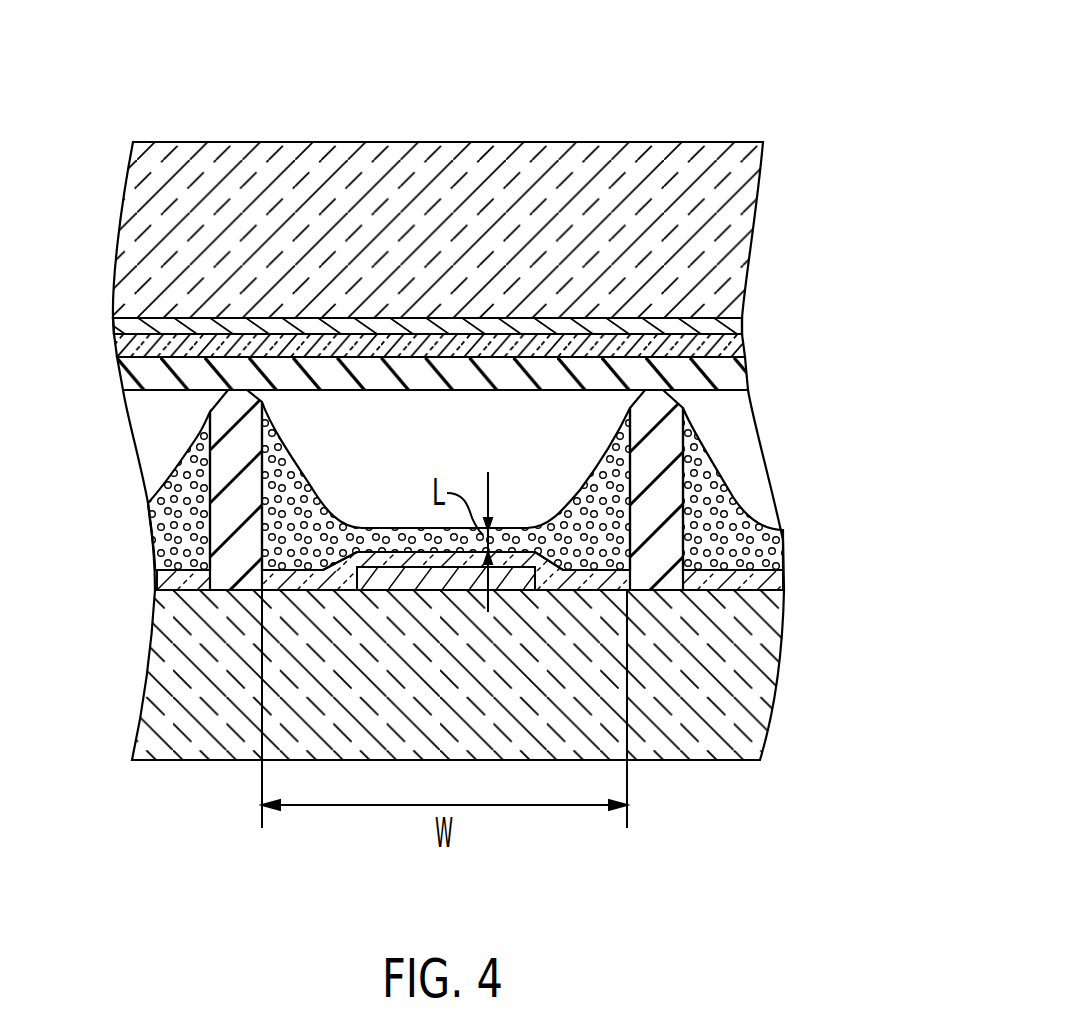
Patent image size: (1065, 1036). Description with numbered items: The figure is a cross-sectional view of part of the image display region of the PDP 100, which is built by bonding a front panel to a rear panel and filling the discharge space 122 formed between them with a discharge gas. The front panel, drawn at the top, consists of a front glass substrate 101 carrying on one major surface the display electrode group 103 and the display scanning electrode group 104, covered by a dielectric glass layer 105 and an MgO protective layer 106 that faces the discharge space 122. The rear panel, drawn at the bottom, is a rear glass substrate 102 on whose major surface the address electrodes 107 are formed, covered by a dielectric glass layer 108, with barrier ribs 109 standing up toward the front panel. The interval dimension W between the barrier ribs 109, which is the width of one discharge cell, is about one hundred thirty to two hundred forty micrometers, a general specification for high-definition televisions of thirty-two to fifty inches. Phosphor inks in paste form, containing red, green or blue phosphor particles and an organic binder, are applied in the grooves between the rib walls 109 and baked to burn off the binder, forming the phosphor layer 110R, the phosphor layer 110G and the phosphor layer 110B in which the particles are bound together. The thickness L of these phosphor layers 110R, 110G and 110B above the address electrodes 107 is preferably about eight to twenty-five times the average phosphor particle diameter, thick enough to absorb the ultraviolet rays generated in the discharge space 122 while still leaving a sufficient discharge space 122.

The PDP 100 is at (222, 95).
The front glass substrate 101 is at (743, 250).
The rear glass substrate 102 is at (770, 680).
The display electrode group 103 is at (740, 326).
The display scanning electrode group 104 is at (785, 328).
The dielectric glass layer 105 is at (745, 347).
The MgO protective layer 106 is at (745, 380).
The address electrodes 107 is at (360, 587).
The dielectric glass layer 108 is at (158, 582).
The barrier ribs 109 is at (215, 425).
The phosphor layer (red phosphor) 110R is at (153, 527).
The phosphor layer (green phosphor) 110G is at (568, 515).
The phosphor layer (blue phosphor) 110B is at (780, 548).
The discharge space 122 is at (577, 427).